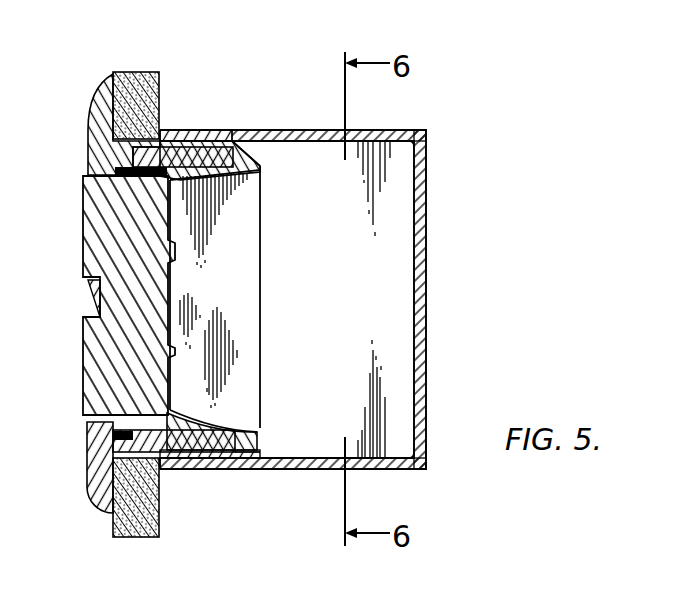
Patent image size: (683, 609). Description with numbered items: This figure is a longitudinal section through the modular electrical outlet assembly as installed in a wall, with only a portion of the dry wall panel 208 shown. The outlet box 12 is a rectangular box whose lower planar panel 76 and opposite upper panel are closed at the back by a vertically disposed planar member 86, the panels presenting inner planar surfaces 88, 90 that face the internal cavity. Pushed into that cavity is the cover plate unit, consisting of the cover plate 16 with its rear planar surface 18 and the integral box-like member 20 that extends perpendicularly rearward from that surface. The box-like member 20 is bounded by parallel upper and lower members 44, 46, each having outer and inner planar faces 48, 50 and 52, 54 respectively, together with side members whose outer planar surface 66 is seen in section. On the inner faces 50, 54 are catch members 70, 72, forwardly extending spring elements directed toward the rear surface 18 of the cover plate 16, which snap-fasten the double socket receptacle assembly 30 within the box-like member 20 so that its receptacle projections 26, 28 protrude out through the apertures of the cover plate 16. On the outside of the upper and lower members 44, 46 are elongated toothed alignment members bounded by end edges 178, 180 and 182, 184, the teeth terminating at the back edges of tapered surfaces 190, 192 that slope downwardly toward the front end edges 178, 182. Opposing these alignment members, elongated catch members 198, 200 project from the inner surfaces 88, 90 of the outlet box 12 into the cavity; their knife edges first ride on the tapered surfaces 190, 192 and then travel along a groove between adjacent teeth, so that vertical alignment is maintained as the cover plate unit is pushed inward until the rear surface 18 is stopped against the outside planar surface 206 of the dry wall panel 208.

The outlet box 12 is at (324, 276).
The cover plate 16 is at (97, 488).
The rear planar surface 18 is at (112, 128).
The box-like member 20 is at (250, 108).
The electrical receptacle projection 26 is at (83, 240).
The electrical receptacle projection 28 is at (83, 378).
The double socket receptacle assembly 30 is at (127, 383).
The upper member 44 is at (233, 131).
The lower member 46 is at (232, 465).
The outer planar face 48 is at (176, 131).
The inner planar face 50 is at (123, 180).
The outer planar face 52 is at (165, 472).
The inner planar face 54 is at (248, 430).
The outer planar surface 66 is at (242, 278).
The catch member 70 is at (167, 130).
The catch member 72 is at (175, 470).
The lower planar panel 76 is at (402, 470).
The planar member 86 is at (427, 192).
The inner planar surface 88 is at (395, 142).
The inner planar surface 90 is at (377, 458).
The end edge 178 is at (262, 166).
The end edge 180 is at (133, 152).
The end edge 182 is at (257, 432).
The end edge 184 is at (133, 448).
The tapered surface 190 is at (254, 131).
The tapered surface 192 is at (270, 470).
The elongated catch member 198 is at (203, 132).
The elongated catch member 200 is at (202, 472).
The outside planar surface 206 is at (112, 80).
The dry wall panel 208 is at (137, 523).